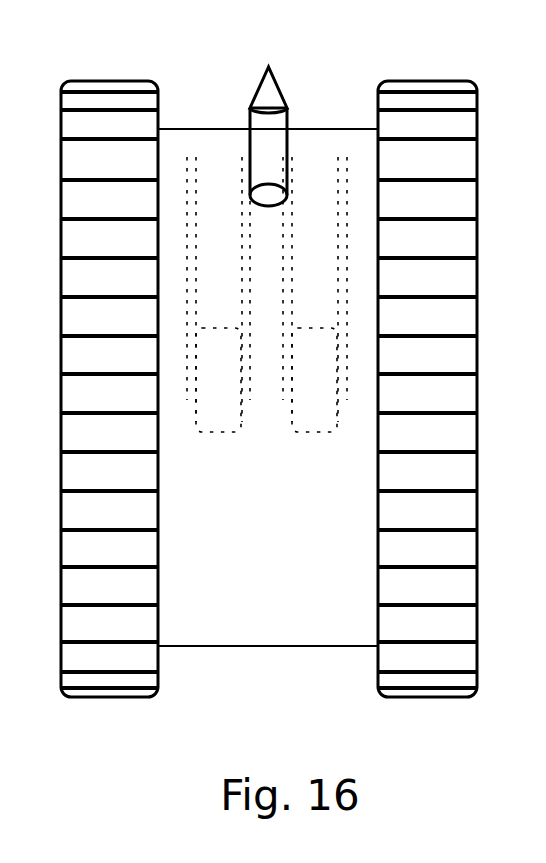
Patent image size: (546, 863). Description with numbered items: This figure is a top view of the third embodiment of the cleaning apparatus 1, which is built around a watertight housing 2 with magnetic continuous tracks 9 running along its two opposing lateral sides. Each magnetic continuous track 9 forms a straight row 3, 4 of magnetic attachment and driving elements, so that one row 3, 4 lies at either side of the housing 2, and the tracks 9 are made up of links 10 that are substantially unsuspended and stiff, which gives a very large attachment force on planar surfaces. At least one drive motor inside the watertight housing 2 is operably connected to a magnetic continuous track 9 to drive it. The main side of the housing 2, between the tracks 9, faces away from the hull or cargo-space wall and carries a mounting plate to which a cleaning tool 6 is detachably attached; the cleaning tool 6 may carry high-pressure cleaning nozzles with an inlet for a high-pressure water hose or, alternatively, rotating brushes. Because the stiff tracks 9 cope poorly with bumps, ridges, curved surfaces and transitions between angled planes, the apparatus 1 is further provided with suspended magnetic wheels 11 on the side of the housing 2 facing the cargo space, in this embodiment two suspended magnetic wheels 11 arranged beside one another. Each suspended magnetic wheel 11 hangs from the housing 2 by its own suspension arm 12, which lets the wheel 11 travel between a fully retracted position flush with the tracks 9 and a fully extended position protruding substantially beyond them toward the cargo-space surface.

The apparatus 1 is at (252, 688).
The watertight housing 2 is at (343, 612).
The straight row of magnetic attachment and driving elements 3 is at (108, 730).
The straight row of magnetic attachment and driving elements 4 is at (429, 730).
The cleaning tool 6 is at (288, 118).
The magnetic continuous track 9 is at (114, 45).
The links 10 is at (90, 306).
The suspended magnetic wheel 11 is at (316, 433).
The suspension arm 12 is at (248, 256).